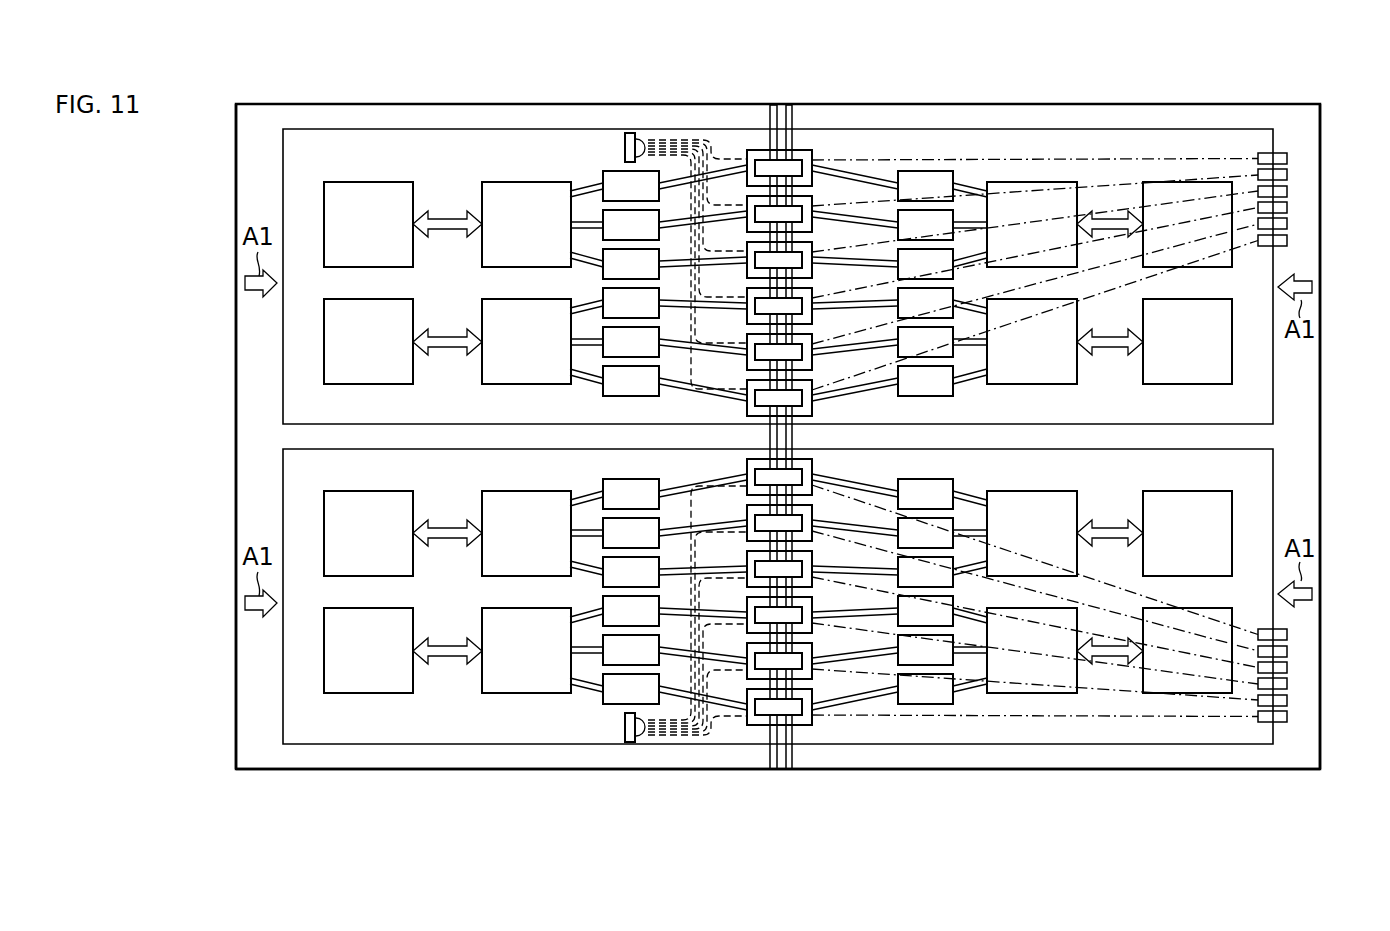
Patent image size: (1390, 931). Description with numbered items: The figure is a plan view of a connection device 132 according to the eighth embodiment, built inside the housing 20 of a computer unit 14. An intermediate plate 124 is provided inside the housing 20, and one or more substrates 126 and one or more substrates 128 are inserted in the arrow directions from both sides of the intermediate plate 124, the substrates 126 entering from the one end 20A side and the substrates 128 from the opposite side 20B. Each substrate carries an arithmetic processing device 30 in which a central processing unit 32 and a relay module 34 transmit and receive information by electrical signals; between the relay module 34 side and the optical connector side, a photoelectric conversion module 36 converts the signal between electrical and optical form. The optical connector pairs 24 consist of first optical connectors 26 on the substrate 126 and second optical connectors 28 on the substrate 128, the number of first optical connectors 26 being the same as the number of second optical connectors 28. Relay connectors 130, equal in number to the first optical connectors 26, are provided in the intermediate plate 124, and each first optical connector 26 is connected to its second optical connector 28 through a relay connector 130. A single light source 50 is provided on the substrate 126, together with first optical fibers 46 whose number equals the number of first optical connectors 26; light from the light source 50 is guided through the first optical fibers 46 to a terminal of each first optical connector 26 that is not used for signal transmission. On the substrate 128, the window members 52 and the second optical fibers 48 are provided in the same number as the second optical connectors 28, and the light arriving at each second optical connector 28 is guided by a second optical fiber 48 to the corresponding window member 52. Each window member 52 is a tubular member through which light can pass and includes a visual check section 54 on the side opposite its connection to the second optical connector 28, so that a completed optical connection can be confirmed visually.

The computer unit 14 is at (358, 797).
The housing 20 is at (482, 771).
The one end 20A is at (236, 746).
The second side of housing 20B is at (1321, 745).
The optical connector pair 24 is at (780, 392).
The first optical connector 26 is at (748, 105).
The second optical connector 28 is at (805, 412).
The arithmetic processing device 30 is at (535, 169).
The central processing unit (CPU) 32 is at (353, 182).
The relay module 34 is at (513, 182).
The photoelectric conversion module 36 is at (617, 171).
The first optical fiber 46 is at (652, 133).
The second optical fiber 48 is at (1213, 152).
The light source 50 is at (627, 133).
The window member 52 is at (1275, 152).
The visual check section 54 is at (1288, 157).
The intermediate plate 124 is at (779, 770).
The substrate 126 is at (372, 127).
The substrate 128 is at (1087, 127).
The relay connector 130 is at (778, 404).
The connection device 132 is at (895, 62).